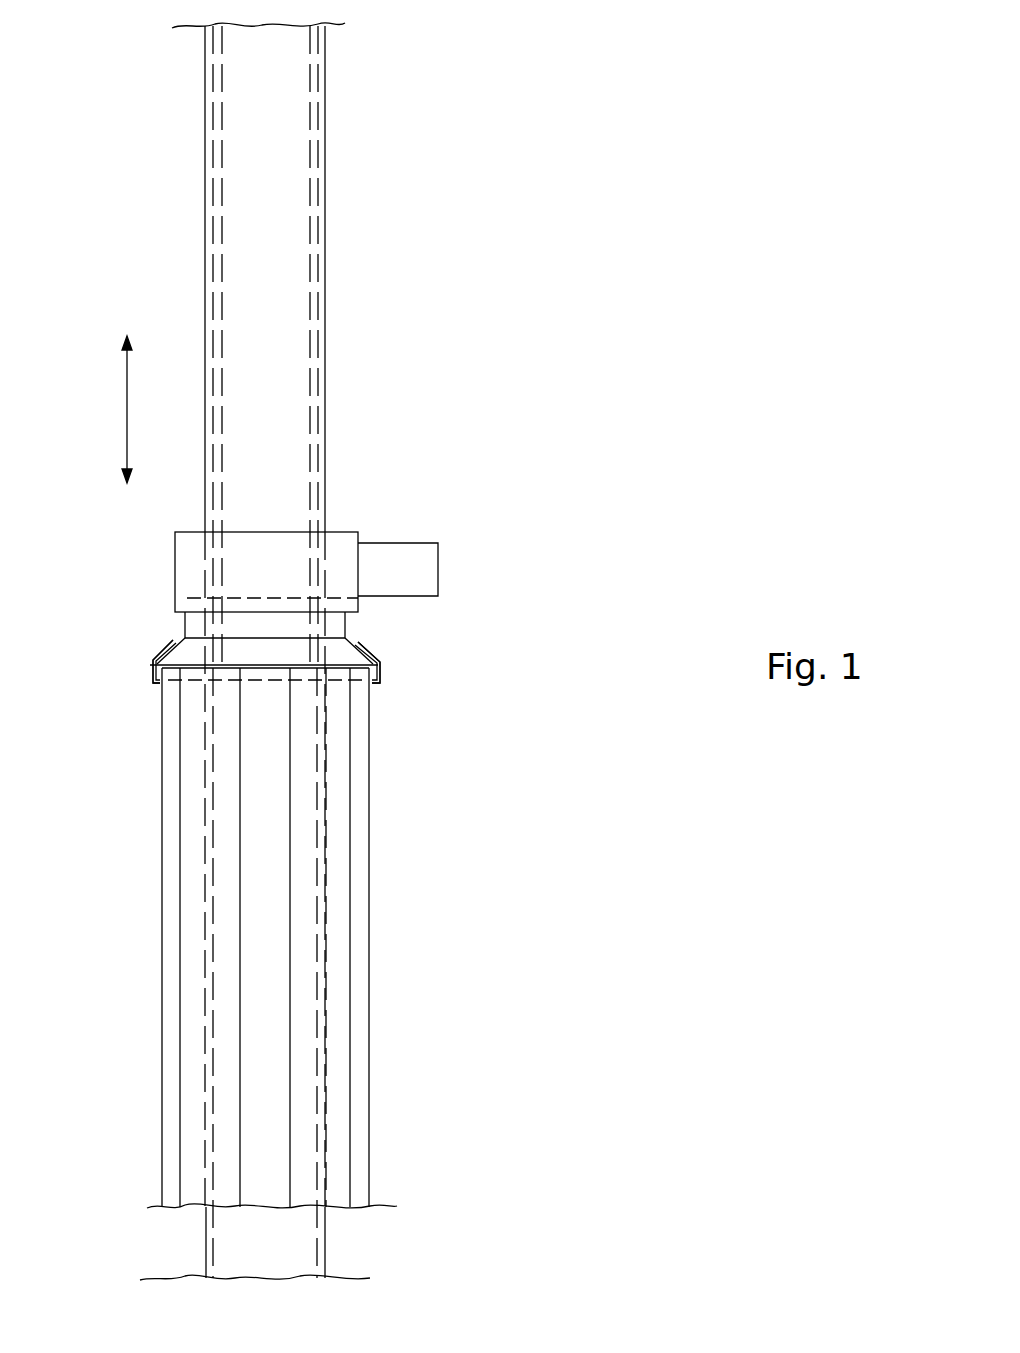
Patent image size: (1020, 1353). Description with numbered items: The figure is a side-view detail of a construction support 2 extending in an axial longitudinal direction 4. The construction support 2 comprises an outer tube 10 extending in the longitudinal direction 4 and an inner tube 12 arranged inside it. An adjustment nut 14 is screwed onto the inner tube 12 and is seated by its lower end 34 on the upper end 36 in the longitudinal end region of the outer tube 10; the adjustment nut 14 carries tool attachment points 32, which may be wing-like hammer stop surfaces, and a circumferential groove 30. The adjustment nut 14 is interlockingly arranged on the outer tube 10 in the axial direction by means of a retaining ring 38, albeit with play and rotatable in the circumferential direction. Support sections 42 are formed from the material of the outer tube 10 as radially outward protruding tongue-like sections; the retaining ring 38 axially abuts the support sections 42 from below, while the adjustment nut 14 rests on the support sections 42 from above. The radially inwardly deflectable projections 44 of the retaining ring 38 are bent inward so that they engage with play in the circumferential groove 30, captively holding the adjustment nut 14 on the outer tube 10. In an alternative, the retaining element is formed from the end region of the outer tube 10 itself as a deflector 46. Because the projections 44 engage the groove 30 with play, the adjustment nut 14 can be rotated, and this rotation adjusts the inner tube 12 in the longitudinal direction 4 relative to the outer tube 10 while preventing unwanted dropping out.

The construction support 2 is at (404, 123).
The axial longitudinal direction 4 is at (127, 410).
The outer tube 10 is at (370, 895).
The inner tube 12 is at (326, 384).
The adjustment nut 14 is at (341, 532).
The circumferential groove 30 is at (348, 626).
The tool attachment point 32 is at (439, 566).
The lower end 34 is at (150, 665).
The upper end 36 is at (372, 684).
The retaining ring 38 is at (386, 672).
The support section 42 is at (182, 681).
The projection 44 is at (362, 640).
The deflector 46 is at (266, 661).